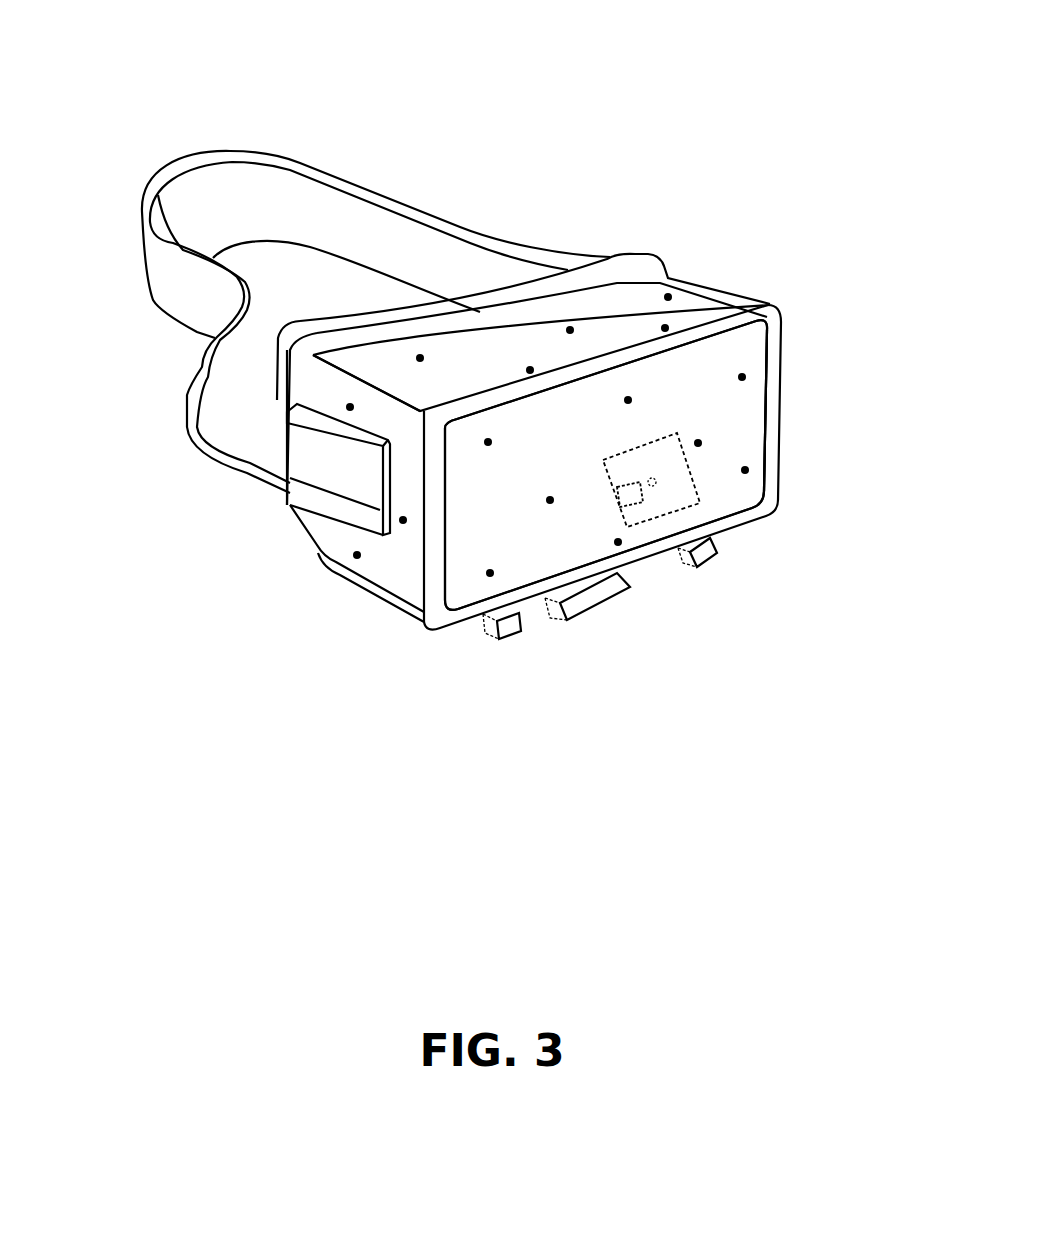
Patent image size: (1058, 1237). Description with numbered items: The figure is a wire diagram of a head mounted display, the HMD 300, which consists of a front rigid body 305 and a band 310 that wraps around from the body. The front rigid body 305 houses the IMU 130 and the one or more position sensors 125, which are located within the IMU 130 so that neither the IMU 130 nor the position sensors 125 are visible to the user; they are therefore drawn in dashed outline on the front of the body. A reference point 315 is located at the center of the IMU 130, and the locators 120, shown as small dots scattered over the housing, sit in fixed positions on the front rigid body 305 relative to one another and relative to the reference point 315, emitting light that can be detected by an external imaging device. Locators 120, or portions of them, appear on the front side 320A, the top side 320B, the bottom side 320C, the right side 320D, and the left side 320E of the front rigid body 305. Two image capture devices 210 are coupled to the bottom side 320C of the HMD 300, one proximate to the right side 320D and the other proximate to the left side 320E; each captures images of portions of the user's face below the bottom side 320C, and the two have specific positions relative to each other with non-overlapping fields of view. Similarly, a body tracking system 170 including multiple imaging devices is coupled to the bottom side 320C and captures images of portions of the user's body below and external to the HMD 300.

The HMD 300 is at (486, 24).
The front rigid body 305 is at (792, 329).
The band 310 is at (509, 222).
The front side 320A is at (461, 525).
The top side 320B is at (378, 357).
The bottom side 320C is at (322, 587).
The right side 320D is at (382, 569).
The left side 320E is at (729, 279).
The locators 120 is at (715, 435).
The position sensors 125 is at (634, 512).
The IMU 130 is at (705, 465).
The body tracking system 170 is at (572, 635).
The image capture device 210 is at (504, 654).
The reference point 315 is at (659, 506).